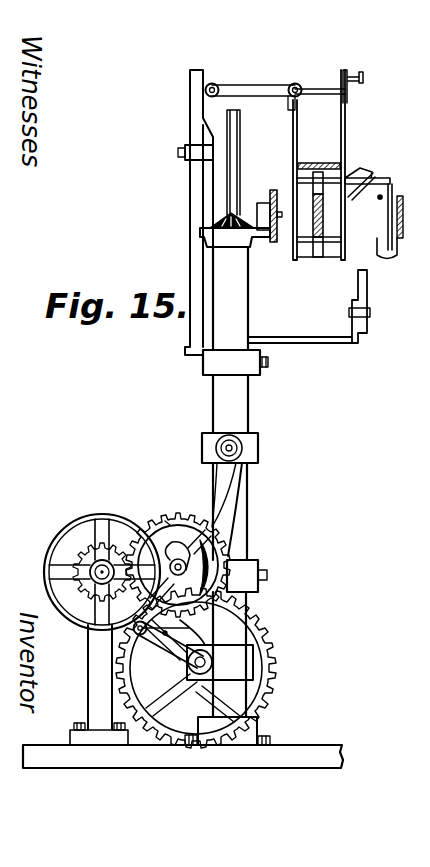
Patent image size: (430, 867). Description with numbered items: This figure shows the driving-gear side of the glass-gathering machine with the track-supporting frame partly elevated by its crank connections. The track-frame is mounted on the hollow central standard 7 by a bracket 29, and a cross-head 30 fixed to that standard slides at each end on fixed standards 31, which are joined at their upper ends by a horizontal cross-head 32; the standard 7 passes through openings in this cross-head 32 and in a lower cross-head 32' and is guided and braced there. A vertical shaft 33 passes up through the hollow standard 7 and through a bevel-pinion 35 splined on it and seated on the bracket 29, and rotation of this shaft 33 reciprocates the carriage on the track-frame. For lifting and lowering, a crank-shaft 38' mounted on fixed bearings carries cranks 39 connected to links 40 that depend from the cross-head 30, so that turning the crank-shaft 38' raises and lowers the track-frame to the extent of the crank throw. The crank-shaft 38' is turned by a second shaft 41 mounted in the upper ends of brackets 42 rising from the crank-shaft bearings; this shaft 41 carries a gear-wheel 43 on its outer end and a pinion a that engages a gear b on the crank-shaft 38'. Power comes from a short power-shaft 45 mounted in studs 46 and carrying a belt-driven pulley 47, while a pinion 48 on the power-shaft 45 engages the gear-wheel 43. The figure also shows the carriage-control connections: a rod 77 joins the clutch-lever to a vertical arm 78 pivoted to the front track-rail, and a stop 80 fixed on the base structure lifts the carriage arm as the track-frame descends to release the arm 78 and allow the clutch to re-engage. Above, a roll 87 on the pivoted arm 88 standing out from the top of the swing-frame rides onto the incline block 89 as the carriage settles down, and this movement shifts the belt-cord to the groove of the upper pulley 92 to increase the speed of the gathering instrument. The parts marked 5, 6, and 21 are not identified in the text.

The frame cross bar 5 is at (319, 164).
The bearing bars 6 is at (336, 207).
The standard 7 is at (230, 298).
The shaft 21 is at (318, 257).
The bracket 29 is at (258, 248).
The cross-head 30 is at (258, 448).
The fixed standards 31 is at (230, 404).
The horizontal cross-head 32 is at (235, 362).
The lower cross-head 32' is at (251, 632).
The shaft 33 is at (226, 173).
The bevel-pinion 35 is at (216, 221).
The crank-shaft 38' is at (220, 662).
The cranks 39 is at (169, 645).
The links 40 is at (233, 501).
The second shaft 41 is at (173, 530).
The brackets 42 is at (180, 628).
The gear-wheel 43 is at (165, 521).
The power-shaft 45 is at (83, 589).
The studs 46 is at (183, 696).
The pulley 47 is at (49, 573).
The pinion 48 is at (82, 563).
The clutch-connecting rod 77 is at (366, 172).
The arm 78 is at (376, 176).
The stop 80 is at (317, 306).
The roll 87 is at (254, 81).
The pivoted arm 88 is at (278, 89).
The incline block 89 is at (203, 137).
The upper pulley 92 is at (363, 86).
The pinion a is at (198, 556).
The gear b is at (268, 660).